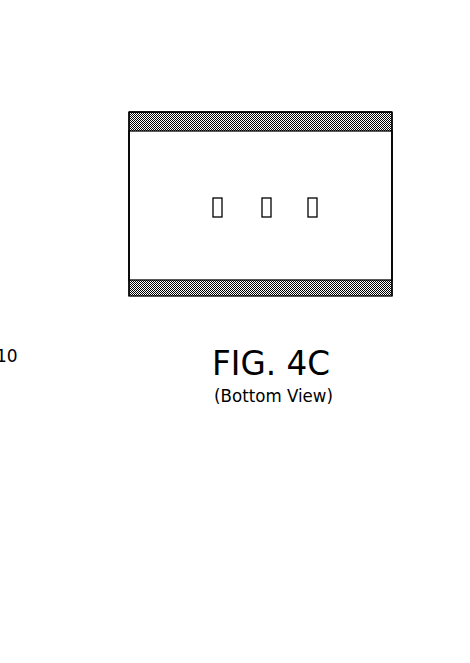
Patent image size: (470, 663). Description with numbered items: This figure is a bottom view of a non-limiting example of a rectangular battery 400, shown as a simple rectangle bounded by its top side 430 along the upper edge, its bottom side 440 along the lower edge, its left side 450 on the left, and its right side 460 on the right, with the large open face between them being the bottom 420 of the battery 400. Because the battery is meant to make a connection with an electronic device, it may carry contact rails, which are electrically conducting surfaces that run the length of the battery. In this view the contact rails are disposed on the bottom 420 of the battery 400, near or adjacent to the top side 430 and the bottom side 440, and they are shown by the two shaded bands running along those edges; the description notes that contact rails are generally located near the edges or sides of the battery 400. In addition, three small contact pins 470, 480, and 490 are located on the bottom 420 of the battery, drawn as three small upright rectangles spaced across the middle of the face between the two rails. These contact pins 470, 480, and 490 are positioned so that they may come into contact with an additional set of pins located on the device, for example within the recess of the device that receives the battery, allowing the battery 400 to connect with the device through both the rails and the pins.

The battery 400 is at (114, 120).
The bottom 420 is at (372, 151).
The top side 430 is at (304, 111).
The bottom side 440 is at (321, 297).
The left side 450 is at (129, 201).
The right side 460 is at (392, 203).
The contact pin 470 is at (212, 193).
The contact pin 480 is at (263, 193).
The contact pin 490 is at (311, 193).